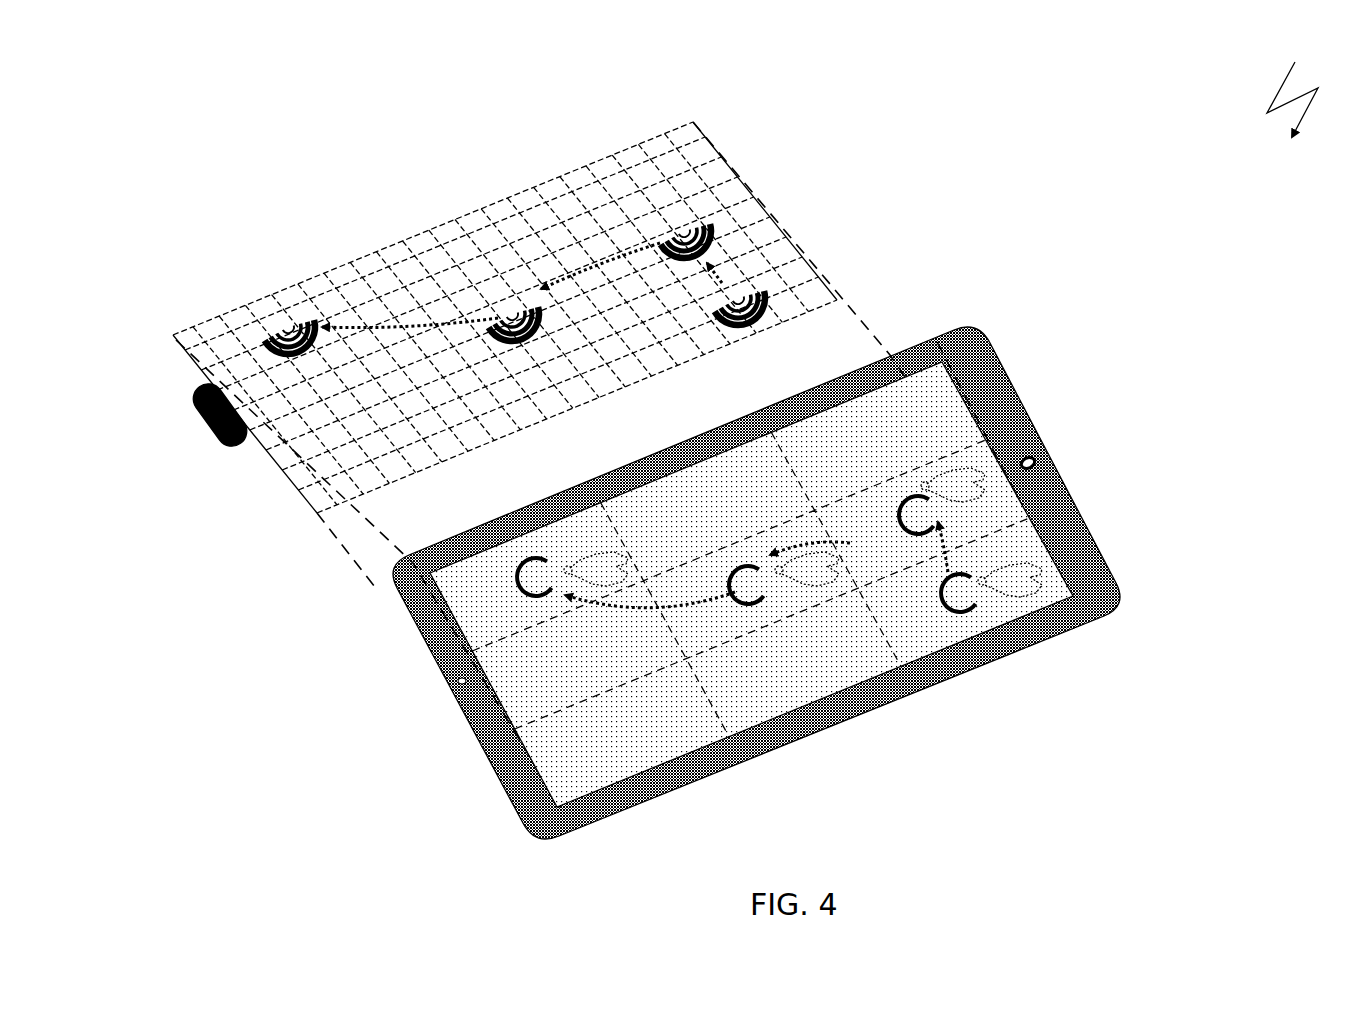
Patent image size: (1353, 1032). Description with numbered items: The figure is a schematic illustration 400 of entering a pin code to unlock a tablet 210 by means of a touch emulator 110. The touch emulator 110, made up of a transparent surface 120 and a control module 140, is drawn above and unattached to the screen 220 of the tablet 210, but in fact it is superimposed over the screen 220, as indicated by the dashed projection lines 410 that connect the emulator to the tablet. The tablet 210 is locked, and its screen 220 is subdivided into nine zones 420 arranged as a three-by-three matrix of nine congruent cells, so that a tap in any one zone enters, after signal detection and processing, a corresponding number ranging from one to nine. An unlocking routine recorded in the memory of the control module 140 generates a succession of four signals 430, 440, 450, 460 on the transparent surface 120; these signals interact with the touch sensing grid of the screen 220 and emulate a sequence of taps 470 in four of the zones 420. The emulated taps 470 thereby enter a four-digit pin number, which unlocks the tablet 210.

The schematic illustration 400 is at (1296, 85).
The touch emulator 110 is at (232, 306).
The transparent surface 120 is at (403, 259).
The control module 140 is at (192, 412).
The tablet 210 is at (1003, 356).
The screen 220 is at (825, 665).
The dashed projection lines 410 is at (345, 572).
The zones 420 is at (664, 508).
The signal 430 is at (745, 277).
The signal 440 is at (706, 218).
The signal 450 is at (517, 288).
The signal 460 is at (292, 308).
The sequence of taps 470 is at (1013, 600).